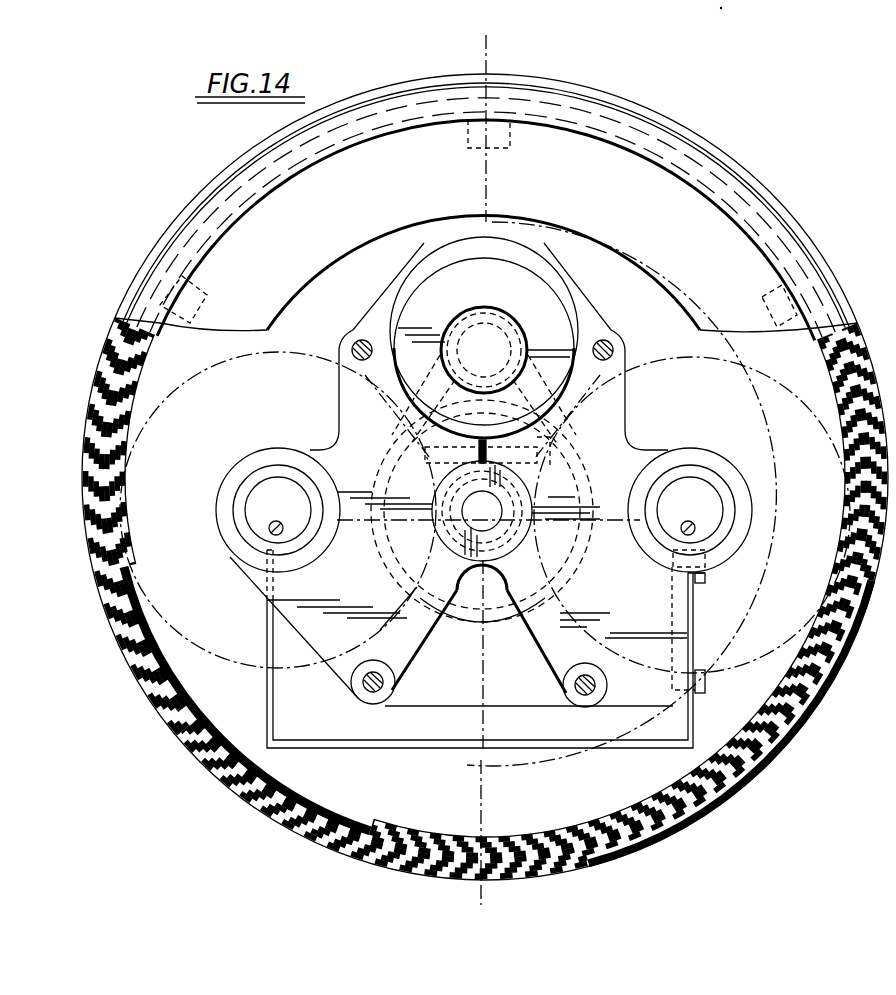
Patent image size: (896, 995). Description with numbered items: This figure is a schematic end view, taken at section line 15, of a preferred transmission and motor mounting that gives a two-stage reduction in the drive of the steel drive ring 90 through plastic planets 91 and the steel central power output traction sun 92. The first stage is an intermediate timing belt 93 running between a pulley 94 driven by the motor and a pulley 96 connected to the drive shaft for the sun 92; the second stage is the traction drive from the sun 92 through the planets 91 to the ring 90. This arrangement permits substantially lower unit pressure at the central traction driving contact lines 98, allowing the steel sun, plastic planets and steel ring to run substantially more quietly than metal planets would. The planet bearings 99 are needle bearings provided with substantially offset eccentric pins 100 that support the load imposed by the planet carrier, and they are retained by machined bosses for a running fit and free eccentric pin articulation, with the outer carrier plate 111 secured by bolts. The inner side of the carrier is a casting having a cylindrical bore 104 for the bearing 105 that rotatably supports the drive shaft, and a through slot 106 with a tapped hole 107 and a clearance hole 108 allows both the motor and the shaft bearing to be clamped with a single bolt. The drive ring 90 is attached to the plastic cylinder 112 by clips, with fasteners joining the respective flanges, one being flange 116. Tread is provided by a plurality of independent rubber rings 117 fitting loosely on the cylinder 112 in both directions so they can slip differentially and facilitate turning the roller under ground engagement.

The section line 15 is at (489, 63).
The drive ring 90 is at (749, 244).
The planets 91 is at (290, 354).
The central power output traction sun 92 is at (452, 540).
The intermediate timing belt 93 is at (580, 400).
The pulley 94 is at (512, 318).
The pulley 96 is at (585, 472).
The central traction driving contact lines 98 is at (370, 547).
The planet bearings 99 is at (280, 483).
The eccentric pins 100 is at (483, 517).
The cylindrical bore 104 is at (482, 587).
The bearing 105 is at (488, 622).
The through slot 106 is at (482, 440).
The tapped hole 107 is at (430, 484).
The clearance hole 108 is at (535, 483).
The outer carrier plate 111 is at (740, 510).
The cylinder 112 is at (708, 685).
The flange 116 is at (697, 302).
The rubber rings 117 is at (773, 735).